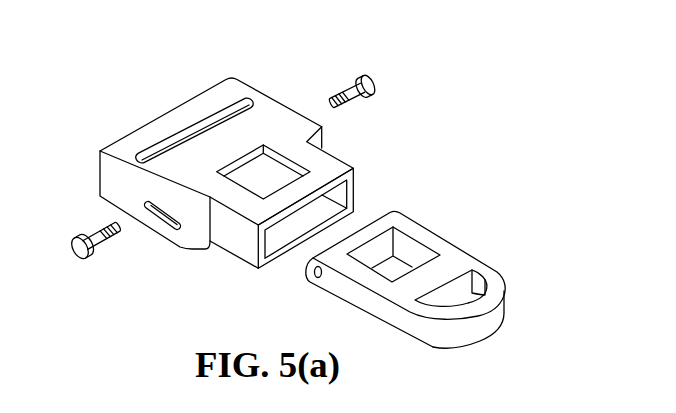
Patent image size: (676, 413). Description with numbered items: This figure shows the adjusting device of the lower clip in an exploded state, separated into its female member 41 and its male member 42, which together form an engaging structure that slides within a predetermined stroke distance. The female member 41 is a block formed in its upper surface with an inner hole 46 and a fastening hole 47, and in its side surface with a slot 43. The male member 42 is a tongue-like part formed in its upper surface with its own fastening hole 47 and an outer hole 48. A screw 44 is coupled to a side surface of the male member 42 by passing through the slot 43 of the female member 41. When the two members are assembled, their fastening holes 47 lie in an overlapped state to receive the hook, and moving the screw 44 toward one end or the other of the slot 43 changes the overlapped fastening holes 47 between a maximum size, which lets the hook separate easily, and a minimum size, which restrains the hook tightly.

The female member 41 is at (257, 86).
The male member 42 is at (447, 233).
The slot 43 is at (162, 224).
The screw 44 is at (92, 230).
The inner hole 46 is at (186, 126).
The fastening hole 47 is at (279, 150).
The outer hole 48 is at (463, 283).